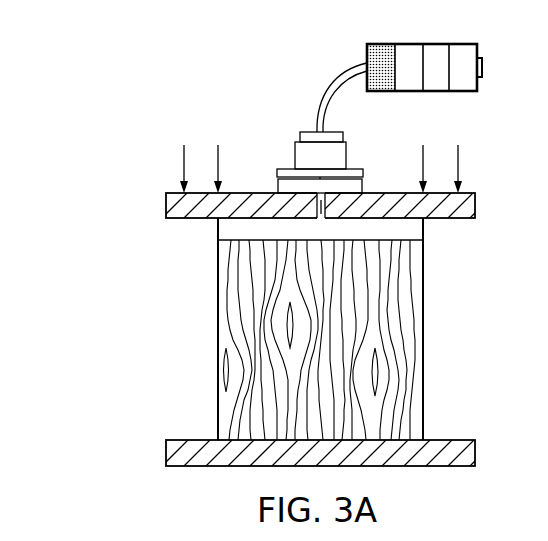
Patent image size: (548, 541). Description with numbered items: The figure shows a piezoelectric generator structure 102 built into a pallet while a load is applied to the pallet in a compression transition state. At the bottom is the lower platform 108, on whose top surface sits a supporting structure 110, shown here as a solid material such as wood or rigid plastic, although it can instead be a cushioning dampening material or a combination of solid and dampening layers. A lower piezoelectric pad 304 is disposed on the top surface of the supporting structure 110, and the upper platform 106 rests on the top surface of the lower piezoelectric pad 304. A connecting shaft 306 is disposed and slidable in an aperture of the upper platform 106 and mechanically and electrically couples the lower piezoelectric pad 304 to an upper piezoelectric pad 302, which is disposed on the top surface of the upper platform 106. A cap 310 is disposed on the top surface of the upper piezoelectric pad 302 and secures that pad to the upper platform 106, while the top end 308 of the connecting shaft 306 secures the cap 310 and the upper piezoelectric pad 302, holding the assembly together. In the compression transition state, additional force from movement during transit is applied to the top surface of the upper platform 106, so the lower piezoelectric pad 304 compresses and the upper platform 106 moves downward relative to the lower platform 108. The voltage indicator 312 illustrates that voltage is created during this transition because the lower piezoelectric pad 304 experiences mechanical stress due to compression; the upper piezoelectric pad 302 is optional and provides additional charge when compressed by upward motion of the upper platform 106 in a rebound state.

The piezoelectric generator structure 102 is at (121, 100).
The upper platform 106 is at (166, 210).
The lower platform 108 is at (166, 452).
The supporting structure 110 is at (218, 332).
The upper piezoelectric pad 302 is at (278, 190).
The lower piezoelectric pad 304 is at (423, 233).
The connecting shaft 306 is at (321, 213).
The top end 308 is at (307, 132).
The cap 310 is at (346, 157).
The voltage indicator 312 is at (463, 44).